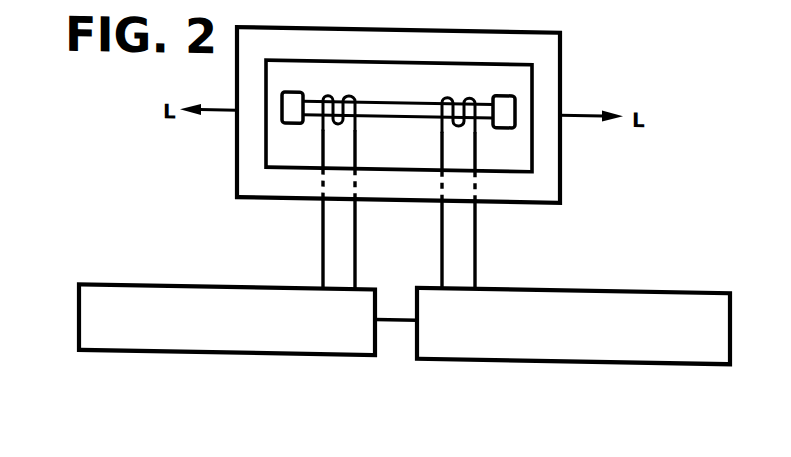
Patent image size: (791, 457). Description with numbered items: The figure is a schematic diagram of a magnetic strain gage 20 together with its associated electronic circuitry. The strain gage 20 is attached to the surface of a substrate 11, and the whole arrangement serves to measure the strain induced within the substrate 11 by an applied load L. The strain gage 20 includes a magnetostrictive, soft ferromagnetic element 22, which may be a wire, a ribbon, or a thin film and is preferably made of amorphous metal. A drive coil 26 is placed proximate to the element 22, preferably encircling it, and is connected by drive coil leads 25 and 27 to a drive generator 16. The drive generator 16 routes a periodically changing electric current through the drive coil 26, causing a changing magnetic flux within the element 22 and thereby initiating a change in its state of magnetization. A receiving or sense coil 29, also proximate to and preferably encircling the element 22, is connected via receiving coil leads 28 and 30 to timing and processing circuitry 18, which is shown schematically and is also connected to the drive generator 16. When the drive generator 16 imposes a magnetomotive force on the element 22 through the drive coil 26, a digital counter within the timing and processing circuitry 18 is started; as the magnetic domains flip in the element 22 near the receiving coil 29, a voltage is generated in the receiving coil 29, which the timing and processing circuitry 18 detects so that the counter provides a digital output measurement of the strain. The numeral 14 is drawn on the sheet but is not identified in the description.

The substrate 11 is at (552, 38).
The sensor assembly 14 is at (398, 64).
The drive generator 16 is at (222, 351).
The timing and processing circuitry 18 is at (590, 352).
The magnetic strain gage 20 is at (348, 58).
The magnetostrictive, soft ferromagnetic element 22 is at (407, 111).
The drive coil lead 25 is at (323, 222).
The drive coil 26 is at (350, 94).
The drive coil lead 27 is at (357, 241).
The receiving coil lead 28 is at (440, 237).
The receiving or sense coil 29 is at (468, 92).
The receiving coil lead 30 is at (477, 257).